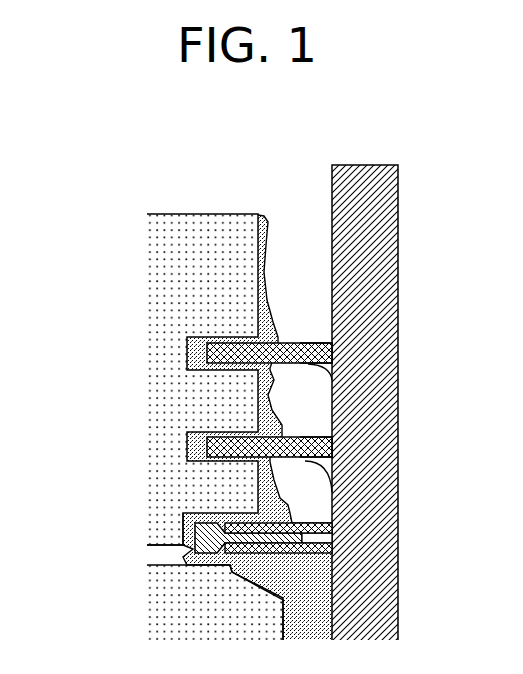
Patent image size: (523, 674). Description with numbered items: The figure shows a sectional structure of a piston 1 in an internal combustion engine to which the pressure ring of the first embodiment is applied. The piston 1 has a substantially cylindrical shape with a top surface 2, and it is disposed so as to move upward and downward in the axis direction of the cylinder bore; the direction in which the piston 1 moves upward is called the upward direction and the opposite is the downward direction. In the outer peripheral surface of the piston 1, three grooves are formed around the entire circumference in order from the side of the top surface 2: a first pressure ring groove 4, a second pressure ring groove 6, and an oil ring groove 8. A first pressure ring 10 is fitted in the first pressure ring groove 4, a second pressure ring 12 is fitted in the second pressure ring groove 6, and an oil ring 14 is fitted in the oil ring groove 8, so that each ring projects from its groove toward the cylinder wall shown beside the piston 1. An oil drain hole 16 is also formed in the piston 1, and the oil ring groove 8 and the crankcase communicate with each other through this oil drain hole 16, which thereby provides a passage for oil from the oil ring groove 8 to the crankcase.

The piston 1 is at (135, 206).
The top surface 2 is at (199, 214).
The first pressure ring groove 4 is at (205, 337).
The second pressure ring groove 6 is at (205, 432).
The oil ring groove 8 is at (205, 512).
The first pressure ring 10 is at (302, 342).
The second pressure ring 12 is at (302, 433).
The oil ring 14 is at (302, 522).
The oil drain hole 16 is at (165, 543).